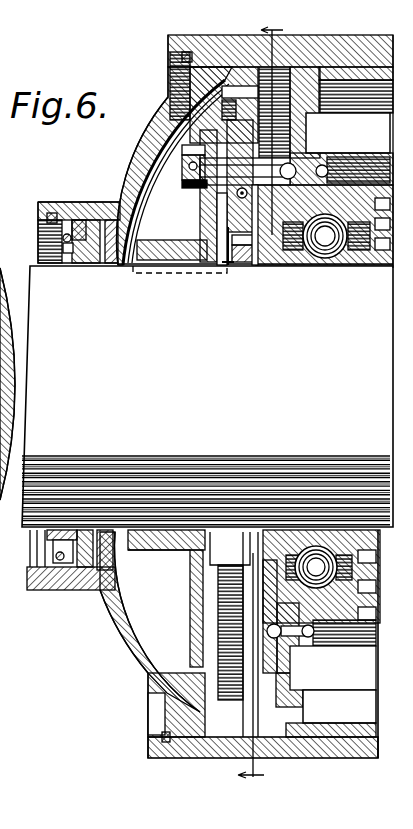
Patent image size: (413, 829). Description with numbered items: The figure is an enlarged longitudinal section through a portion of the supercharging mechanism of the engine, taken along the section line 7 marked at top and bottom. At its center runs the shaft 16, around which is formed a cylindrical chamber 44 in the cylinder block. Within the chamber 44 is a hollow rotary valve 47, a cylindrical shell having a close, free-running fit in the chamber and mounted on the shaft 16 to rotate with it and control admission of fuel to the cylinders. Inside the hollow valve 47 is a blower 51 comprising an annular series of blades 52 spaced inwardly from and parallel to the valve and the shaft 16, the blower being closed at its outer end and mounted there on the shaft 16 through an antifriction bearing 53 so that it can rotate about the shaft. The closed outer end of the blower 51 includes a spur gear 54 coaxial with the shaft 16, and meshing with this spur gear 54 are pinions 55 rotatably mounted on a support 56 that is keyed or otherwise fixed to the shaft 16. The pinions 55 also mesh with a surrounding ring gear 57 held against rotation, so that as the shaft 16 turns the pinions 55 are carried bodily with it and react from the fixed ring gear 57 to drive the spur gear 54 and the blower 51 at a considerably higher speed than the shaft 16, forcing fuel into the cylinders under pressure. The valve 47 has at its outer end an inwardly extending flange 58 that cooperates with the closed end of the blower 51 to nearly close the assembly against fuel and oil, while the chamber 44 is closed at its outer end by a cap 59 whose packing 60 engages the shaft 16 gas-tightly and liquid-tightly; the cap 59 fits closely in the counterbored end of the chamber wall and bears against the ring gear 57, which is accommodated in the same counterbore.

The section line 7- 7 is at (260, 405).
The shaft 16 is at (196, 396).
The cylindrical chamber 44 is at (294, 72).
The hollow rotary valve 47 is at (337, 738).
The blower 51 is at (358, 687).
The blades 52 is at (348, 133).
The antifriction bearing 53 is at (337, 273).
The spur gear 54 is at (238, 267).
The pinions 55 is at (208, 222).
The support 56 is at (194, 607).
The ring gear 57 is at (240, 72).
The flange 58 is at (256, 634).
The cap 59 is at (148, 161).
The packing 60 is at (63, 232).